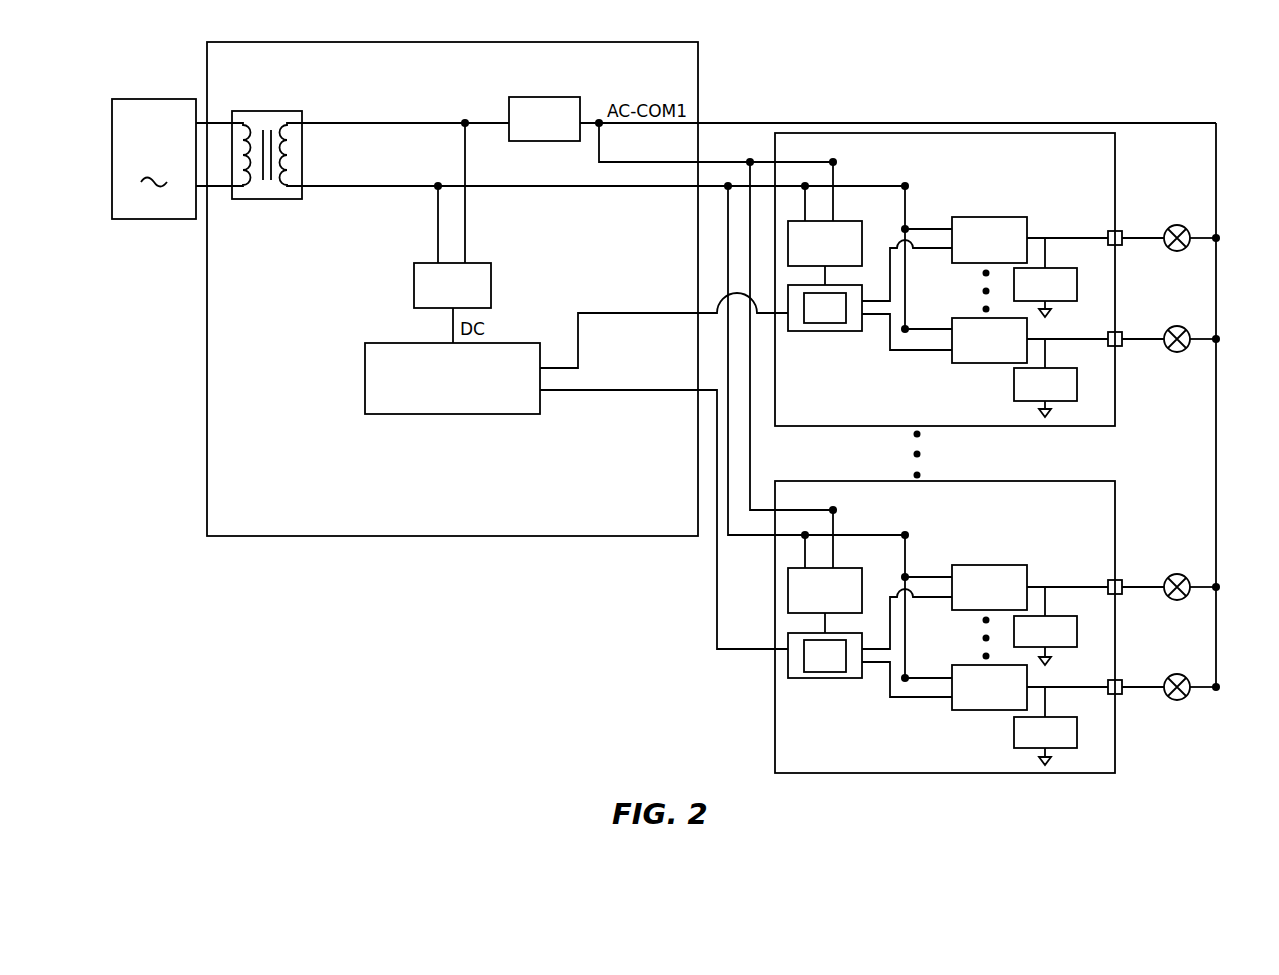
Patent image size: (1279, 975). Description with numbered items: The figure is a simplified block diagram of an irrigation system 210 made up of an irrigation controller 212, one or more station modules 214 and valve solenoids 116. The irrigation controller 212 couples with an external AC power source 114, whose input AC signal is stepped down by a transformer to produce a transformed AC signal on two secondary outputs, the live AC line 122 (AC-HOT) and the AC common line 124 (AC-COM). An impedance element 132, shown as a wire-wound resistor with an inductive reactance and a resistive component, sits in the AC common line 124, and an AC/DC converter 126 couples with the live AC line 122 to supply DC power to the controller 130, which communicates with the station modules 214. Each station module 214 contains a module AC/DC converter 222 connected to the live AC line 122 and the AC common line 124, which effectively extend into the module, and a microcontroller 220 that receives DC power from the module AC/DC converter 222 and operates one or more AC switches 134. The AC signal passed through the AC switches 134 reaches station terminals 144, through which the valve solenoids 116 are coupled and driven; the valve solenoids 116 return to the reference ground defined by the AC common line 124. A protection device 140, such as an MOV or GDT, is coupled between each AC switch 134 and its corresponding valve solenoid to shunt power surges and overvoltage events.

The external AC power source 114 is at (145, 96).
The valve solenoid 116 is at (1177, 225).
The live AC line 122 is at (379, 193).
The AC common line 124 is at (422, 128).
The AC/DC converter 126 is at (418, 262).
The controller 130 is at (394, 342).
The impedance element 132 is at (541, 144).
The AC switch 134 is at (1005, 217).
The protection device 140 is at (1055, 268).
The station terminal 144 is at (1118, 231).
The irrigation system 210 is at (1127, 48).
The irrigation controller 212 is at (280, 40).
The station module 214 is at (1116, 163).
The microcontroller 220 is at (825, 331).
The module AC/DC converter 222 is at (838, 220).